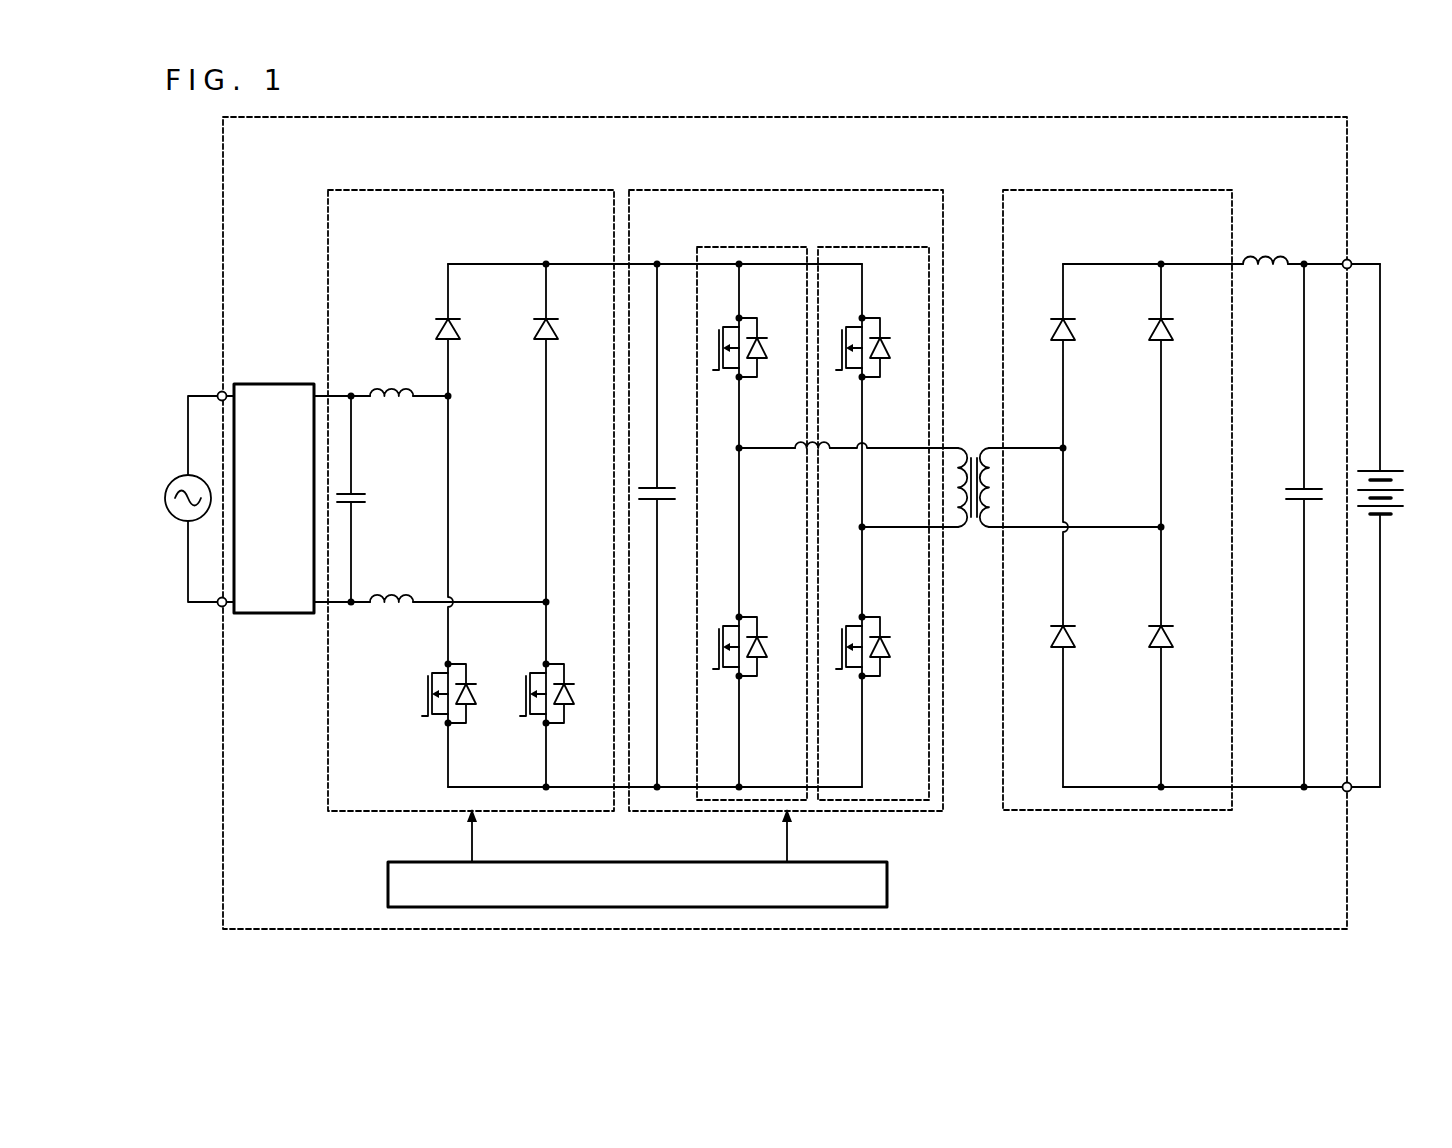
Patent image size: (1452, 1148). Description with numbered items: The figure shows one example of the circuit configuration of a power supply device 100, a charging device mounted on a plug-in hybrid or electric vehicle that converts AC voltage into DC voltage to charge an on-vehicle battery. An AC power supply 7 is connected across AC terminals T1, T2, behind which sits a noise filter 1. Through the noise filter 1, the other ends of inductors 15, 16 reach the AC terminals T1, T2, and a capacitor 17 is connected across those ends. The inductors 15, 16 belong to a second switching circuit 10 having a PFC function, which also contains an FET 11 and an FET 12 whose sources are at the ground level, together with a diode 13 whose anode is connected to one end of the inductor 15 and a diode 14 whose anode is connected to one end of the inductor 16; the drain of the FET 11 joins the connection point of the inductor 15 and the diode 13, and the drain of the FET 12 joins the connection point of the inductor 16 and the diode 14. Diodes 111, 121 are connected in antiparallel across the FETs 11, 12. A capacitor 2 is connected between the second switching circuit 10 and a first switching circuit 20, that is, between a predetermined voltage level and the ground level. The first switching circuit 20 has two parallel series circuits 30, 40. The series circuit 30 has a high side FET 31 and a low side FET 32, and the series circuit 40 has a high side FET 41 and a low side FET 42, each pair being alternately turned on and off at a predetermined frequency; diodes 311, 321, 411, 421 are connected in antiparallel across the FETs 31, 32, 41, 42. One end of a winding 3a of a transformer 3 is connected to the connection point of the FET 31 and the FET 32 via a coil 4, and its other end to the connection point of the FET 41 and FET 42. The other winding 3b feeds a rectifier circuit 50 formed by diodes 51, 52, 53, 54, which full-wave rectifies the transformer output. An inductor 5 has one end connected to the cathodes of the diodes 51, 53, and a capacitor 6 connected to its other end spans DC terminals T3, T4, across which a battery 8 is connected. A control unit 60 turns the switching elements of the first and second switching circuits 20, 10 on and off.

The power supply device 100 is at (415, 117).
The second switching circuit 10 is at (435, 190).
The first switching circuit 20 is at (820, 190).
The series circuit 30 is at (733, 247).
The series circuit 40 is at (847, 247).
The rectifier circuit 50 is at (1120, 190).
The control unit 60 is at (840, 861).
The noise filter 1 is at (276, 383).
The capacitor 2 is at (668, 481).
The transformer 3 is at (970, 454).
The winding 3a is at (960, 484).
The winding 3b is at (986, 484).
The coil 4 is at (802, 458).
The inductor 5 is at (1266, 271).
The capacitor 6 is at (1294, 485).
The AC power supply 7 is at (186, 522).
The battery 8 is at (1366, 520).
The FET 11 is at (428, 682).
The FET 12 is at (526, 682).
The diode 13 is at (455, 341).
The diode 14 is at (553, 341).
The inductor 15 is at (393, 385).
The inductor 16 is at (393, 591).
The capacitor 17 is at (367, 498).
The diode 111 is at (473, 704).
The diode 121 is at (571, 704).
The FET 31 is at (726, 338).
The FET 32 is at (726, 636).
The FET 41 is at (849, 338).
The FET 42 is at (849, 636).
The diode 311 is at (765, 358).
The diode 321 is at (765, 657).
The diode 411 is at (888, 358).
The diode 421 is at (888, 657).
The diode 51 is at (1070, 341).
The diode 52 is at (1070, 648).
The diode 53 is at (1168, 341).
The diode 54 is at (1168, 648).
The AC terminal T1 is at (219, 391).
The AC terminal T2 is at (219, 610).
The DC terminal T3 is at (1349, 259).
The DC terminal T4 is at (1350, 792).